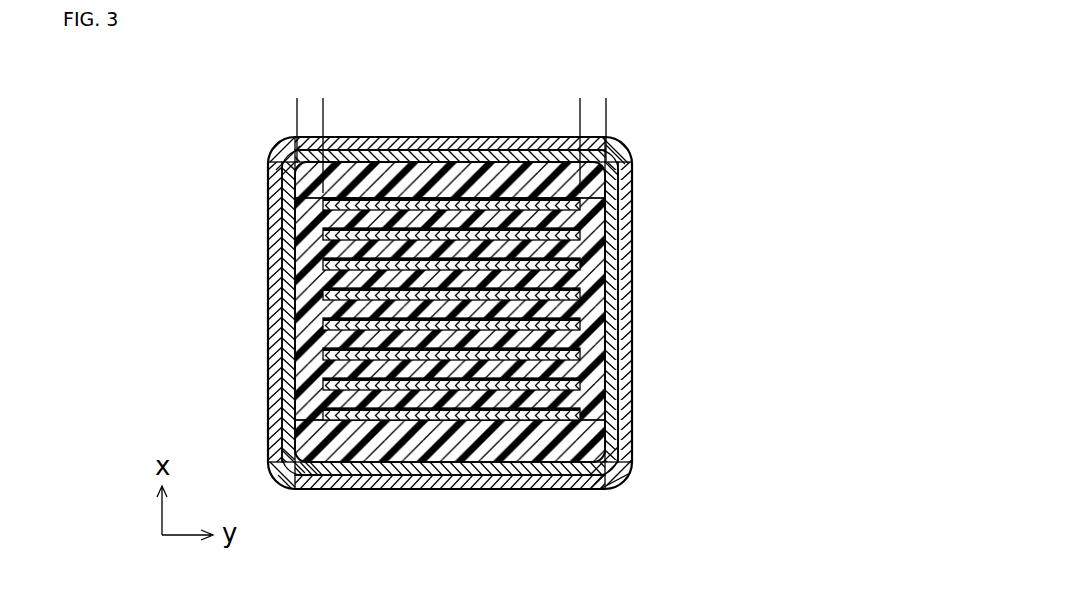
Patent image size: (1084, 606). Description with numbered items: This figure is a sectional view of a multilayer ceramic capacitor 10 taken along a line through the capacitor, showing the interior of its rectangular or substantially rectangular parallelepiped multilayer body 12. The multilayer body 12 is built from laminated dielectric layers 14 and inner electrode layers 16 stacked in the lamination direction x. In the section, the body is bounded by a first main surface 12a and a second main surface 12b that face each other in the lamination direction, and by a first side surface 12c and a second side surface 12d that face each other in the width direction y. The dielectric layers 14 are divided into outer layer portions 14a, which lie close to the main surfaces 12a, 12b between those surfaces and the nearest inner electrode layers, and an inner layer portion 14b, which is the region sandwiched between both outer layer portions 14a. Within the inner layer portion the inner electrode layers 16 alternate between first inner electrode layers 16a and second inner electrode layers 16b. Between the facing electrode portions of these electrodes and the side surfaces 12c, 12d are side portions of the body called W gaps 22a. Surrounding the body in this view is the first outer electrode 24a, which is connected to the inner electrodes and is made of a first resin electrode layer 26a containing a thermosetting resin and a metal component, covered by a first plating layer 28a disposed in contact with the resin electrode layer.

The multilayer ceramic capacitor 10 is at (229, 122).
The multilayer body 12 is at (537, 152).
The first main surface 12a is at (352, 162).
The second main surface 12b is at (355, 462).
The first side surface 12c is at (296, 292).
The second side surface 12d is at (605, 322).
The dielectric layers 14 is at (450, 317).
The outer layer portions 14a is at (406, 185).
The inner layer portion 14b is at (491, 280).
The inner electrode layers 16 is at (507, 346).
The first inner electrode layers 16a is at (323, 266).
The second inner electrode layers 16b is at (578, 297).
The side portions (W gaps) 22a is at (323, 98).
The first outer electrode 24a is at (530, 313).
The first resin electrode layer 26a is at (612, 191).
The first plating layer 28a is at (627, 222).